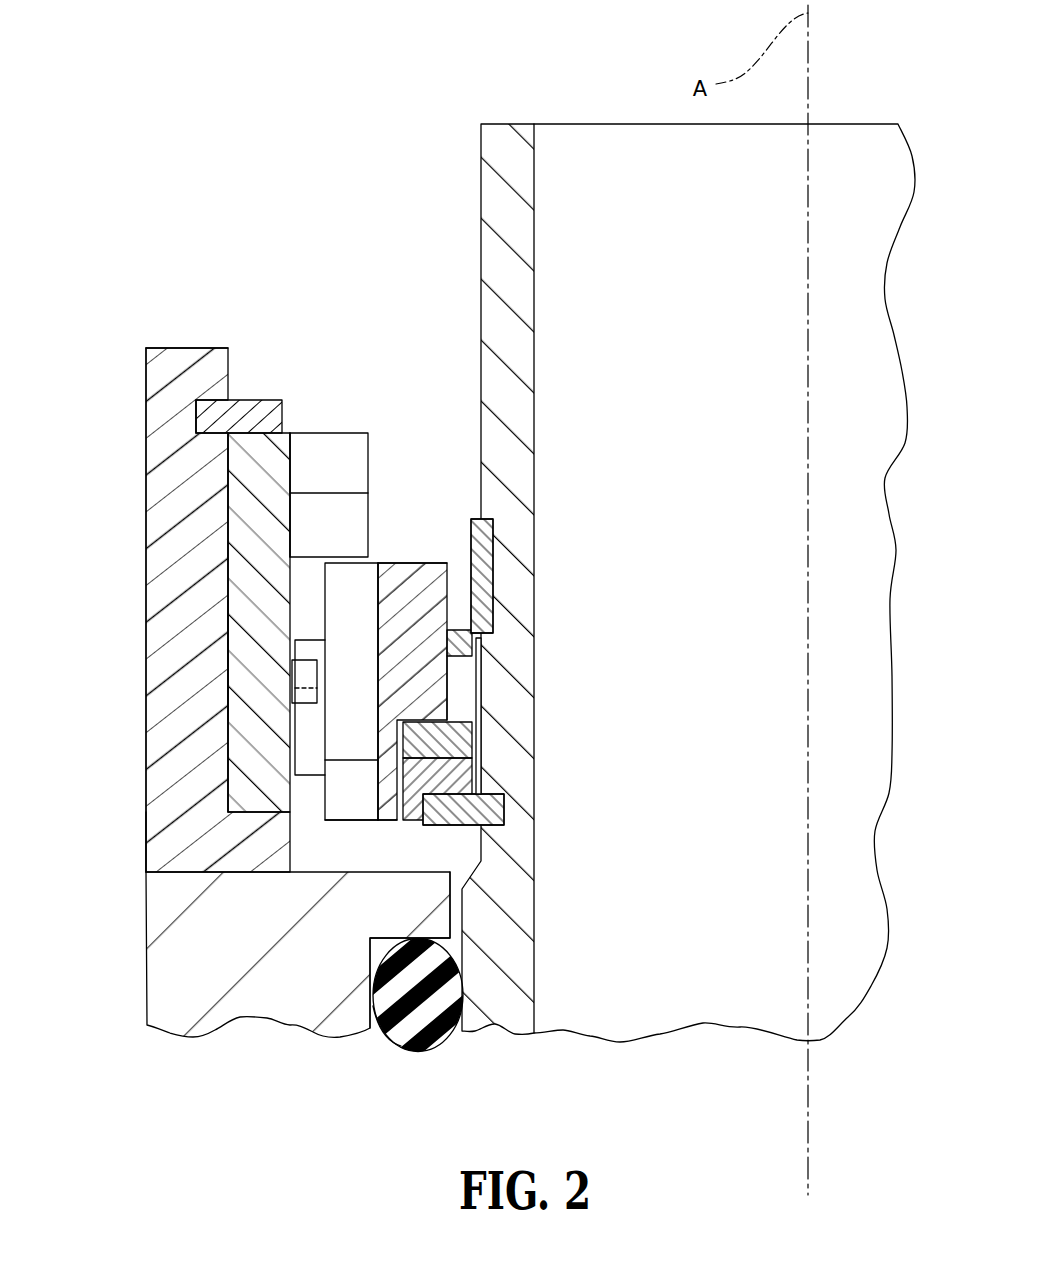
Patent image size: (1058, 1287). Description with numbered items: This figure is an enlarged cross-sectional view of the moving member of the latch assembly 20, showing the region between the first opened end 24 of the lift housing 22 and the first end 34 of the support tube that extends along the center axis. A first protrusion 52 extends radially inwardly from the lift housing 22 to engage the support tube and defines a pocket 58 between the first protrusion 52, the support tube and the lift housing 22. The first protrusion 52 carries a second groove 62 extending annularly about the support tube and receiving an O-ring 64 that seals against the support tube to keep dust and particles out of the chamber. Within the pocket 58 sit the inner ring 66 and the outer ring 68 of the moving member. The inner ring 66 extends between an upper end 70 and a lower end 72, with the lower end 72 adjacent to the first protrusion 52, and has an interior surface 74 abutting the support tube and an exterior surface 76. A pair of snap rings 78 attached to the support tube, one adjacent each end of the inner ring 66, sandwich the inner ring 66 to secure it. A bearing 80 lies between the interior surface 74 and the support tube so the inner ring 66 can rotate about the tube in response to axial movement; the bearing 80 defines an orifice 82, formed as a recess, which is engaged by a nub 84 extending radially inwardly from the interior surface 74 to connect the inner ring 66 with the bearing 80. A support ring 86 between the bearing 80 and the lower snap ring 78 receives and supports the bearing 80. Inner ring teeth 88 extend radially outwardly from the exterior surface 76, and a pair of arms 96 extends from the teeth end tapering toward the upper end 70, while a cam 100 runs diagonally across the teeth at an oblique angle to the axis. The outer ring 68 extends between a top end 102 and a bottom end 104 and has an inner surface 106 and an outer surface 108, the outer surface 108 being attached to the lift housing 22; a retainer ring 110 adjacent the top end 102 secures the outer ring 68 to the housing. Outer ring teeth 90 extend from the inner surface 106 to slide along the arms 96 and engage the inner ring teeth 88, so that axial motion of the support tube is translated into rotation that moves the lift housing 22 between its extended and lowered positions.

The latch assembly 20 is at (214, 176).
The lift housing 22 is at (138, 826).
The first opened end 24 is at (190, 347).
The first end 34 is at (497, 124).
The first protrusion 52 is at (338, 933).
The pocket 58 is at (233, 478).
The second groove 62 is at (397, 1046).
The O-ring 64 is at (455, 1040).
The inner ring 66 is at (425, 578).
The outer ring 68 is at (235, 662).
The upper end 70 is at (398, 568).
The lower end 72 is at (387, 820).
The interior surface 74 is at (458, 652).
The exterior surface 76 is at (378, 718).
The snap rings 78 is at (494, 560).
The bearing 80 is at (462, 772).
The orifice 82 is at (472, 683).
The nub 84 is at (460, 675).
The support ring 86 is at (472, 791).
The inner ring teeth 88 is at (357, 810).
The outer ring teeth 90 is at (328, 447).
The arms 96 is at (345, 583).
The cam 100 is at (303, 648).
The top end 102 is at (250, 425).
The bottom end 104 is at (240, 815).
The inner surface 106 is at (290, 450).
The outer surface 108 is at (227, 597).
The retainer ring 110 is at (196, 423).